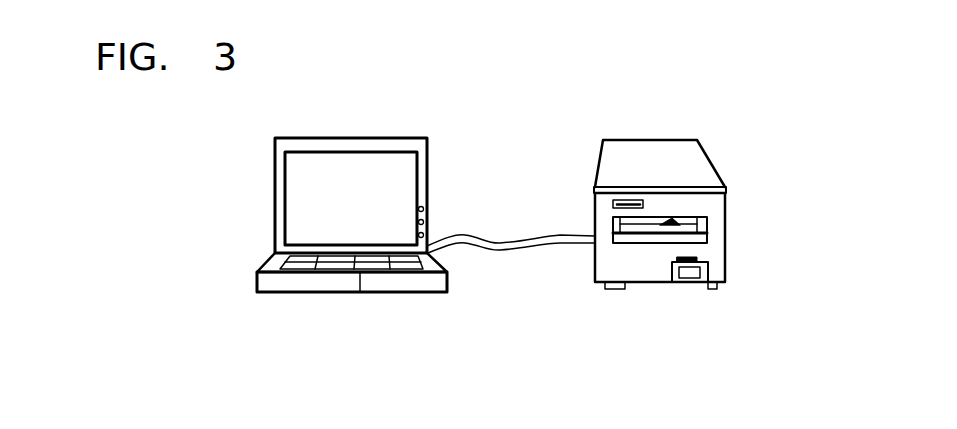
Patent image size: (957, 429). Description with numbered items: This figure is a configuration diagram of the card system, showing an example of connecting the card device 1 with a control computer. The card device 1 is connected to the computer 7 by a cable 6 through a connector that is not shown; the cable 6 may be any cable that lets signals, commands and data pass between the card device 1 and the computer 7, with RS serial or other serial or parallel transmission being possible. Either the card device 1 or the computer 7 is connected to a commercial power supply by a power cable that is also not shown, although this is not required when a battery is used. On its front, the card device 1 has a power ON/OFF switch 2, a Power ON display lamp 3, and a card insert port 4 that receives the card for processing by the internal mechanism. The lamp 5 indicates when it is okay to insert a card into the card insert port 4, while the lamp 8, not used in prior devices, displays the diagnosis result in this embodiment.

The card device 1 is at (613, 260).
The power ON/OFF switch 2 is at (697, 283).
The Power ON display lamp 3 is at (693, 257).
The card insert port 4 is at (613, 238).
The lamp 5 is at (678, 220).
The cable 6 is at (483, 243).
The computer 7 is at (313, 275).
The lamp 8 is at (630, 203).